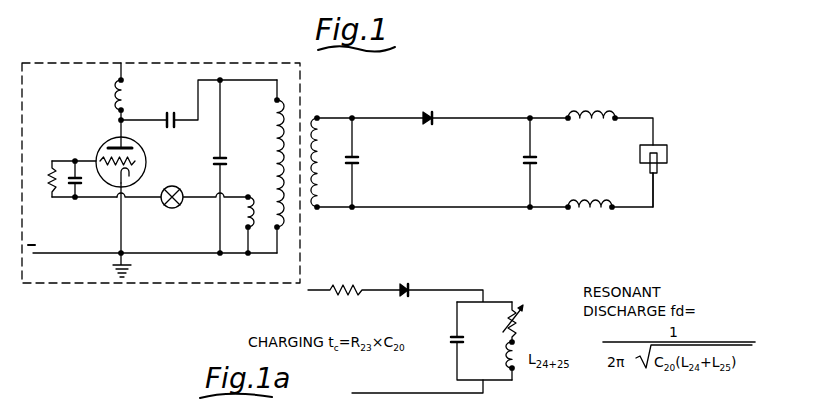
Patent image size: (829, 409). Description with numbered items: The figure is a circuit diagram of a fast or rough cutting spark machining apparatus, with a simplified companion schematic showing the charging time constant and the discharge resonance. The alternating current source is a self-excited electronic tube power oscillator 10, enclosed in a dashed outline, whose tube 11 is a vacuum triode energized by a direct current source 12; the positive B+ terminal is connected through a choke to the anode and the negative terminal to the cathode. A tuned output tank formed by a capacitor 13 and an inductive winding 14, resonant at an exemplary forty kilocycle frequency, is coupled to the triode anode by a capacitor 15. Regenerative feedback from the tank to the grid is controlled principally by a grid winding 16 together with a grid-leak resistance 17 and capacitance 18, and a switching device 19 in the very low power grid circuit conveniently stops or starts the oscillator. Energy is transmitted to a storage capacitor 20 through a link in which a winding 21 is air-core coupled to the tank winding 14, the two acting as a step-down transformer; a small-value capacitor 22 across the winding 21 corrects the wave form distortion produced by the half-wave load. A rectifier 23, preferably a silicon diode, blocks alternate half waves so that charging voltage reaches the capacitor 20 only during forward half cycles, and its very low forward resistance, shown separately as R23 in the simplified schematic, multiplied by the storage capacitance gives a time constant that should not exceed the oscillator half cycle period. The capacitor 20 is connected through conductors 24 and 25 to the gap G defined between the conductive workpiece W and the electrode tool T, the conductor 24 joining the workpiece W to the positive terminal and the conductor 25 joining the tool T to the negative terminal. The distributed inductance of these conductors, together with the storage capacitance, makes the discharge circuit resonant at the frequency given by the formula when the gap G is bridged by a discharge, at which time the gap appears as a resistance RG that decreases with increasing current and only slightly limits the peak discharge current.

In FIG. 1, the electronic tube power oscillator 10 is at (156, 287).
In FIG. 1, the oscillator electric valve or tube 11 is at (146, 151).
In FIG. 1, the direct current source 12 is at (125, 93).
In FIG. 1, the capacitor 13 is at (228, 163).
In FIG. 1, the inductive coil or winding 14 is at (275, 146).
In FIG. 1, the capacitor 15 is at (172, 112).
In FIG. 1, the grid winding 16 is at (247, 216).
In FIG. 1, the grid-leak resistance 17 is at (50, 193).
In FIG. 1, the grid-leak capacitance 18 is at (80, 184).
In FIG. 1, the switching device 19 is at (171, 209).
In FIG. 1, the storage capacitor 20 is at (522, 162).
In FIG. 1A, the storage capacitor 20 is at (463, 340).
In FIG. 1, the winding 21 is at (322, 131).
In FIG. 1, the small-value capacitor 22 is at (359, 160).
In FIG. 1, the rectifier or unidirectional conducting means 23 is at (427, 111).
In FIG. 1A, the rectifier or unidirectional conducting means 23 is at (403, 283).
In FIG. 1, the conductor 24 is at (597, 113).
In FIG. 1, the conductor 25 is at (586, 213).
In FIG. 1, the workpiece W is at (667, 148).
In FIG. 1, the gap G is at (658, 161).
In FIG. 1, the electrode tool T is at (655, 176).
In FIG. 1A, the rectifier forward resistance R23 is at (337, 283).
In FIG. 1A, the gap resistance RG is at (523, 341).